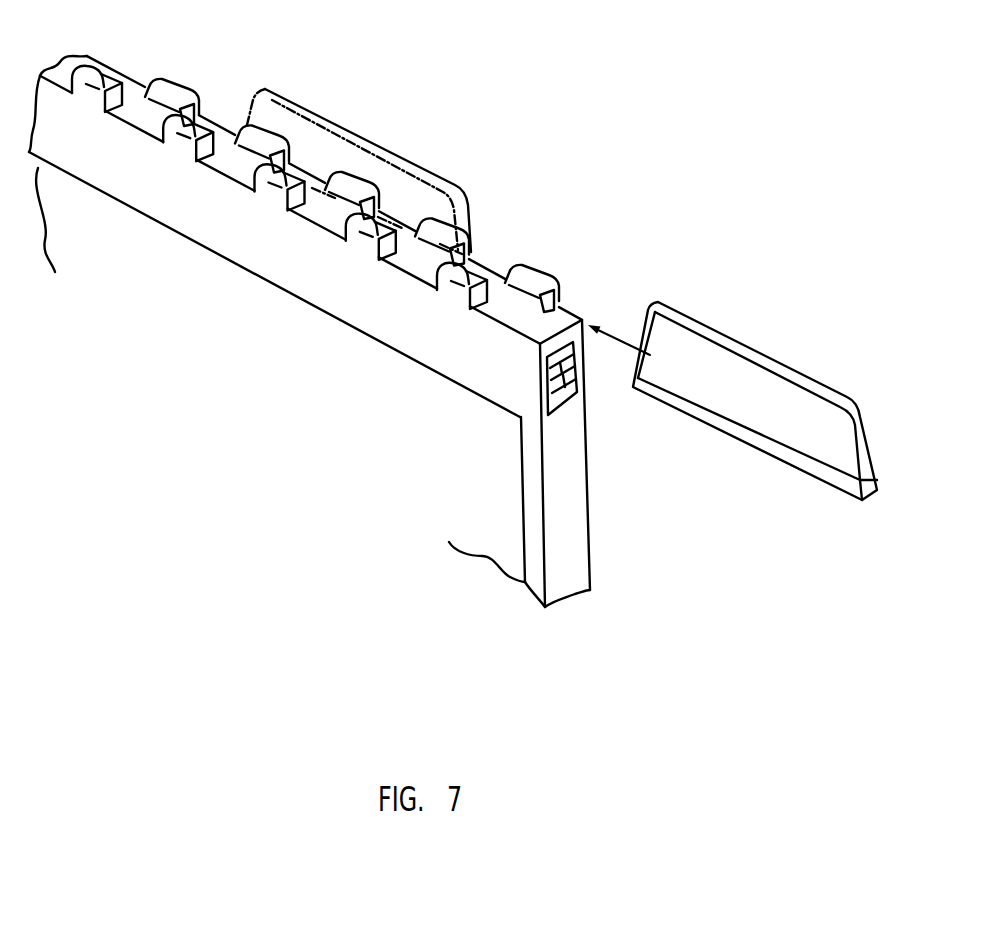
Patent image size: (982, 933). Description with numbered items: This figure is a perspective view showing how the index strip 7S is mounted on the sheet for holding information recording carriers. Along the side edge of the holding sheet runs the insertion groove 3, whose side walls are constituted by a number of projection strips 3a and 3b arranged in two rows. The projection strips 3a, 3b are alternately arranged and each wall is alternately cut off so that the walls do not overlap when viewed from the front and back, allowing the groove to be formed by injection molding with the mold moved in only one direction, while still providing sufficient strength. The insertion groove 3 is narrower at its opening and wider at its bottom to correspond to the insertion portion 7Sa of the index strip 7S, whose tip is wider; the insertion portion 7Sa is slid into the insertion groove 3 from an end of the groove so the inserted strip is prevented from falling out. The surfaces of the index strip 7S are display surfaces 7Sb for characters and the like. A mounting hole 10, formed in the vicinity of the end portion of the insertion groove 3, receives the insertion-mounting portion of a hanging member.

The insertion groove 3 is at (226, 145).
The projection strip 3a is at (173, 92).
The projection strip 3b is at (92, 97).
The index strip 7S is at (427, 170).
The insertion portion 7Sa is at (797, 457).
The display surface 7Sb is at (823, 433).
The mounting hole 10 is at (563, 400).